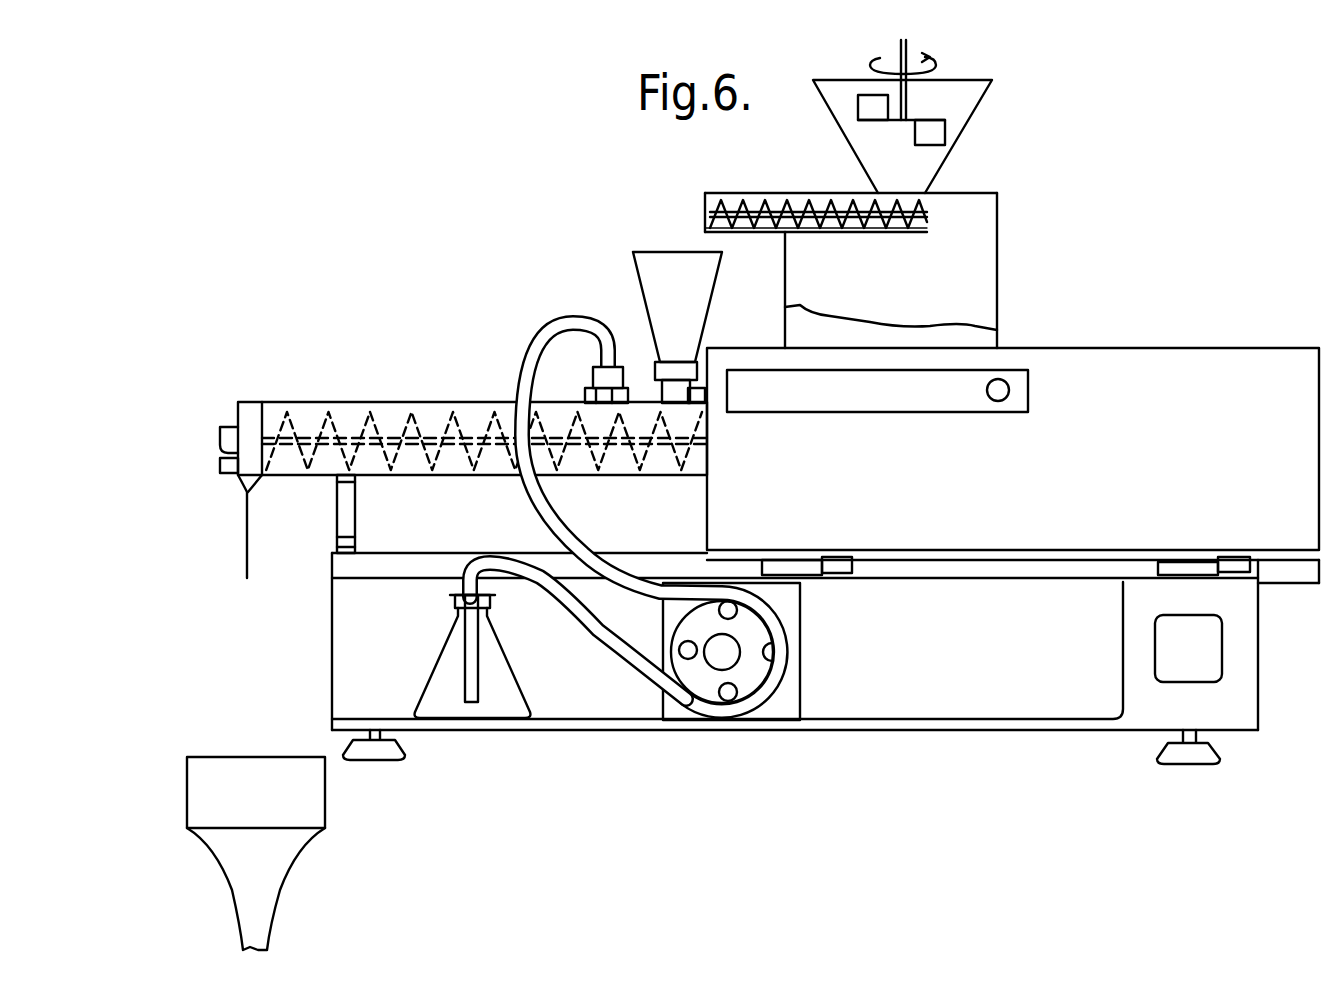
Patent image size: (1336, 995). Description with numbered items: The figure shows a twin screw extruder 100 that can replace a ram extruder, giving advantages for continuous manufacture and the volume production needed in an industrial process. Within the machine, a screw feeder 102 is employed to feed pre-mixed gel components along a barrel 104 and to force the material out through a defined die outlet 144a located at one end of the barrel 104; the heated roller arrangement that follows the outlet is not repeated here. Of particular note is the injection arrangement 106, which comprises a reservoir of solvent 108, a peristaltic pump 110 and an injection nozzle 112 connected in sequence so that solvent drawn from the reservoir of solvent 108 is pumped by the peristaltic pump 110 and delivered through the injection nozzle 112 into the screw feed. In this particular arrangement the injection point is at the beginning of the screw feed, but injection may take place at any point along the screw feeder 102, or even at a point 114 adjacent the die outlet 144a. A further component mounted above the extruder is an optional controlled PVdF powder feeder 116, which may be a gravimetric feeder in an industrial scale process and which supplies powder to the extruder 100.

The twin screw extruder 100 is at (1067, 252).
The screw feeder 102 is at (422, 418).
The barrel 104 is at (312, 402).
The injection arrangement 106 is at (617, 647).
The reservoir of solvent 108 is at (447, 693).
The peristaltic pump 110 is at (750, 673).
The injection nozzle 112 is at (627, 385).
The point adjacent the outlet 114 is at (219, 467).
The controlled PVdF powder feeder 116 is at (794, 192).
The die outlet 144a is at (240, 485).